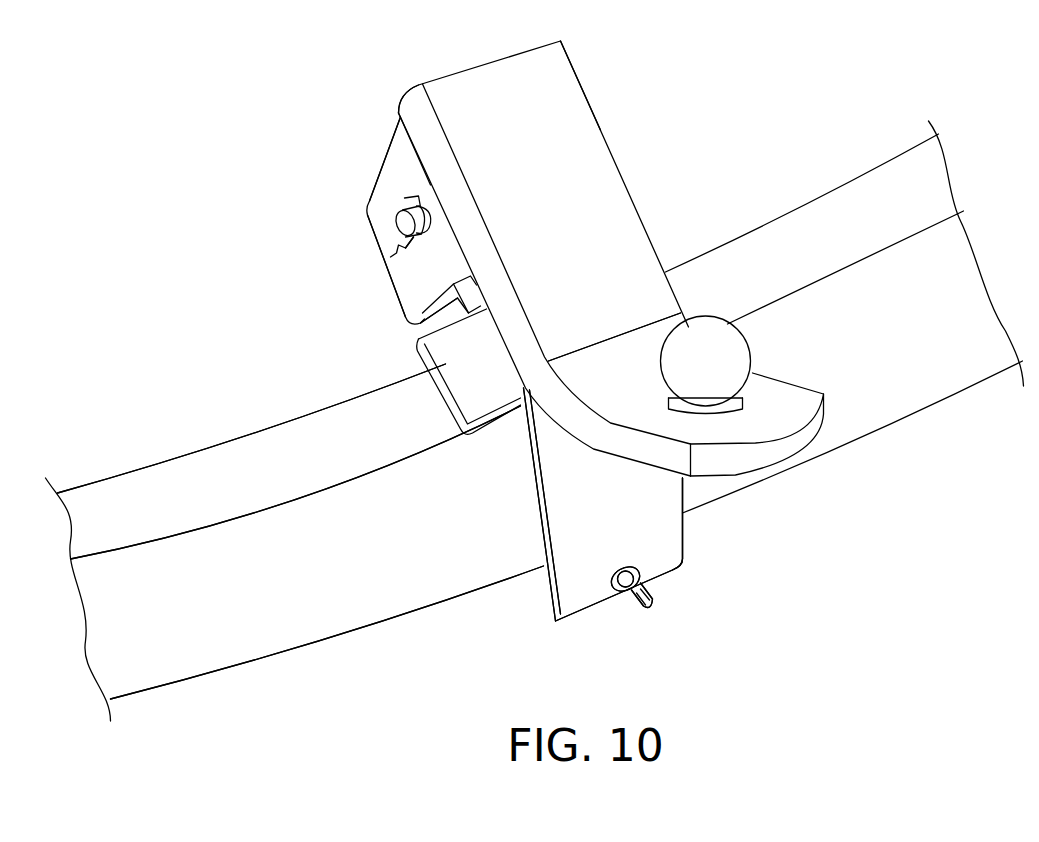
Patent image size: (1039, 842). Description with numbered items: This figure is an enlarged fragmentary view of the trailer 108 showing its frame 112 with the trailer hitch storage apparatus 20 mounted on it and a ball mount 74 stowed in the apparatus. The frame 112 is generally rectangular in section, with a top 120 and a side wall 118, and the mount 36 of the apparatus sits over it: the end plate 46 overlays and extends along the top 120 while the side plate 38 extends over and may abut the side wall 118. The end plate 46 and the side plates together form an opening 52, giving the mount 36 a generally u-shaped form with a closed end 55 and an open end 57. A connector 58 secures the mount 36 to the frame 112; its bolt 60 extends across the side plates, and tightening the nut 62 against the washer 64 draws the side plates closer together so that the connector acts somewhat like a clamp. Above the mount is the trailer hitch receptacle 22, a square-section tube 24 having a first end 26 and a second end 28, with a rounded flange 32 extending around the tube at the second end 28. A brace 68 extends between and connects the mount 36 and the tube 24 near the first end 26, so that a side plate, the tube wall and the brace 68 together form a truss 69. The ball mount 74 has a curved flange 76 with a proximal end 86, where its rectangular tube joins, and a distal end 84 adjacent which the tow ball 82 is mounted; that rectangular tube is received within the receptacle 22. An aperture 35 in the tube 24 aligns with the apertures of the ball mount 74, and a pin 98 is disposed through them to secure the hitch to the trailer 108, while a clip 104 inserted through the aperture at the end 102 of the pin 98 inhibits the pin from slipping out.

The trailer hitch storage apparatus 20 is at (265, 100).
The trailer hitch receptacle 22 is at (378, 135).
The tube 24 is at (400, 170).
The first end 26 is at (395, 224).
The second end 28 is at (398, 104).
The rounded flange 32 is at (398, 118).
The aperture 35 is at (410, 200).
The mount 36 is at (530, 507).
The side plate 38 is at (594, 511).
The end plate 46 is at (461, 374).
The opening 52 is at (541, 568).
The closed end 55 is at (510, 432).
The open end 57 is at (690, 564).
The connector 58 is at (652, 595).
The bolt 60 is at (643, 605).
The nut 62 is at (614, 592).
The washer 64 is at (628, 570).
The brace 68 is at (425, 325).
The truss 69 is at (400, 323).
The ball mount 74 is at (607, 122).
The curved flange 76 is at (657, 218).
The tow ball 82 is at (715, 357).
The distal end 84 is at (796, 397).
The proximal end 86 is at (590, 68).
The pin 98 is at (398, 240).
The end 102 is at (410, 260).
The clip 104 is at (405, 255).
The trailer 108 is at (186, 380).
The frame 112 is at (268, 618).
The side wall 118 is at (293, 569).
The top 120 is at (270, 476).